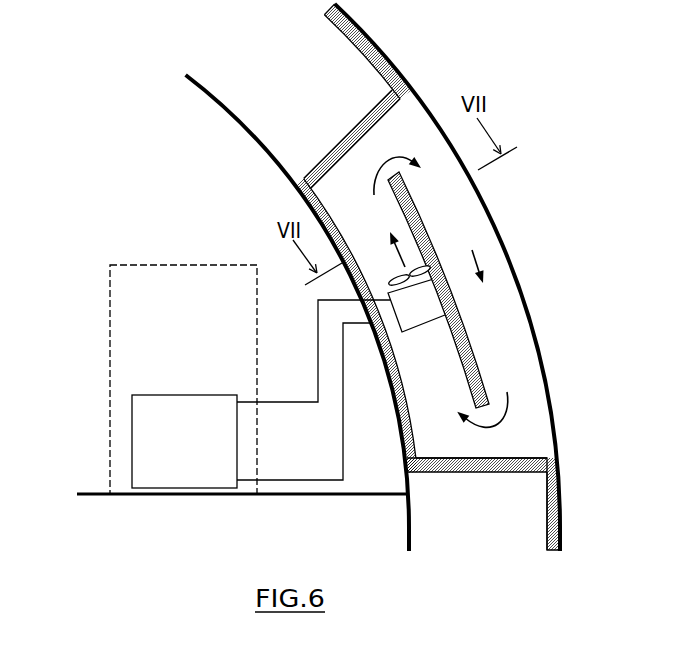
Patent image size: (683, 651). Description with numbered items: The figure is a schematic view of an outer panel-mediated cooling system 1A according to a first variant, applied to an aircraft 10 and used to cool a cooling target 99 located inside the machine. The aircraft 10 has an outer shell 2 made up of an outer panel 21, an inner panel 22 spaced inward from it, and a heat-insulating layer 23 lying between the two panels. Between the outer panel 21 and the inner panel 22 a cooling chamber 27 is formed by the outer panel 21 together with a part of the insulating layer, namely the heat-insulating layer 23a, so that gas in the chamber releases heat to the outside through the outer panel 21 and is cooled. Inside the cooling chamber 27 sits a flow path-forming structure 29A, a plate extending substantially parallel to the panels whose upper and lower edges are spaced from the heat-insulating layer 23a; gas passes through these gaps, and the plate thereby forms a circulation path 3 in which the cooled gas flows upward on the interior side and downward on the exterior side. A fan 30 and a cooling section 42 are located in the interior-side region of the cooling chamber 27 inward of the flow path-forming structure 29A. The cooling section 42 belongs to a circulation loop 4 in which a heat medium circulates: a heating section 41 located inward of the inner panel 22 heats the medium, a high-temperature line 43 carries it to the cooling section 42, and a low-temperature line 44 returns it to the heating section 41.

The outer panel-mediated cooling system 1A is at (493, 275).
The outer shell 2 is at (365, 32).
The circulation path 3 is at (475, 260).
The circulation loop 4 is at (242, 507).
The aircraft 10 is at (447, 277).
The outer panel 21 is at (563, 502).
The inner panel 22 is at (242, 128).
The heat-insulating layer 23 is at (347, 33).
The heat-insulating layer 23a is at (490, 472).
The cooling chamber 27 is at (447, 384).
The flow path-forming structure 29A is at (490, 358).
The fan 30 is at (430, 266).
The heating section 41 is at (182, 397).
The cooling section 42 is at (467, 303).
The high-temperature line 43 is at (318, 350).
The low-temperature line 44 is at (343, 413).
The cooling target 99 is at (110, 283).